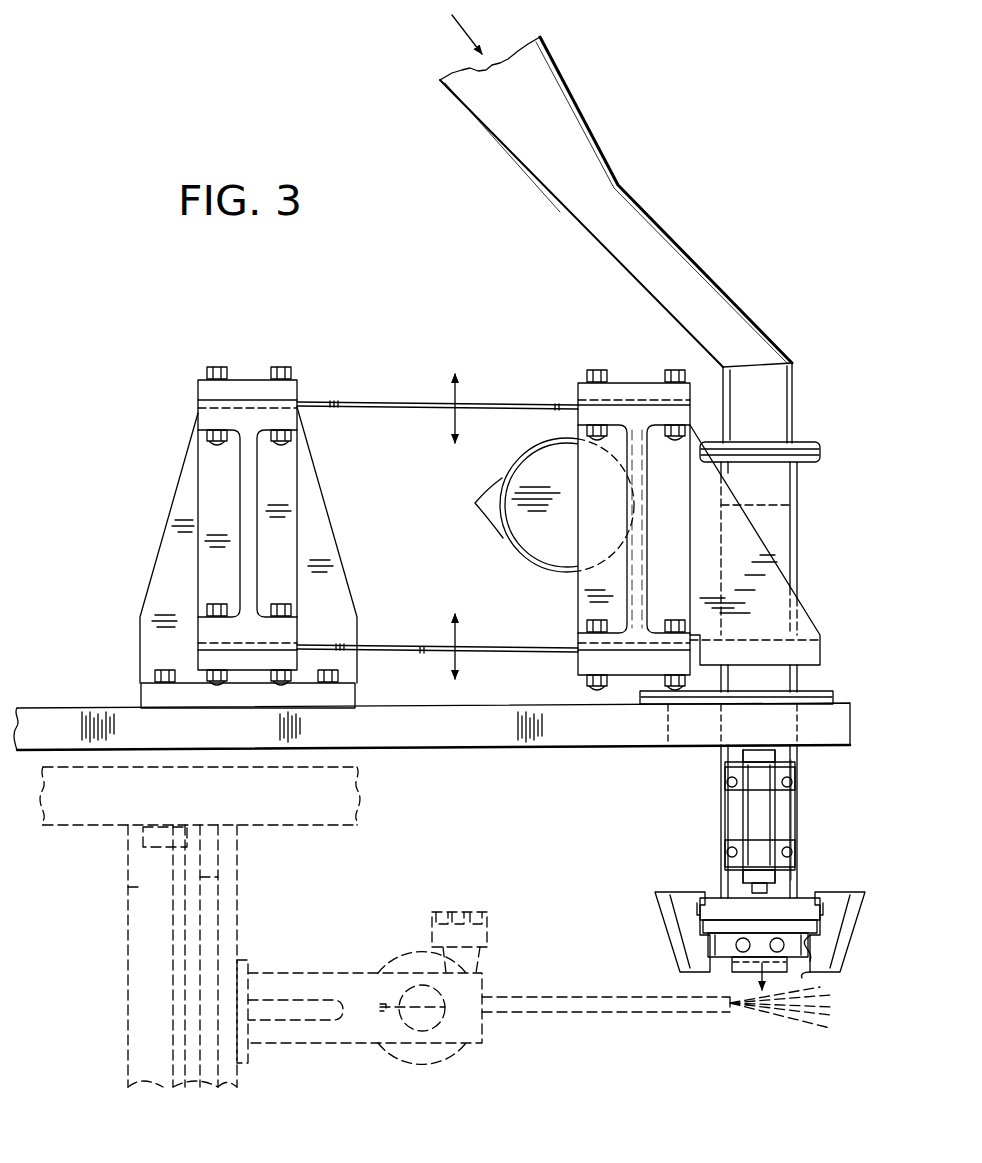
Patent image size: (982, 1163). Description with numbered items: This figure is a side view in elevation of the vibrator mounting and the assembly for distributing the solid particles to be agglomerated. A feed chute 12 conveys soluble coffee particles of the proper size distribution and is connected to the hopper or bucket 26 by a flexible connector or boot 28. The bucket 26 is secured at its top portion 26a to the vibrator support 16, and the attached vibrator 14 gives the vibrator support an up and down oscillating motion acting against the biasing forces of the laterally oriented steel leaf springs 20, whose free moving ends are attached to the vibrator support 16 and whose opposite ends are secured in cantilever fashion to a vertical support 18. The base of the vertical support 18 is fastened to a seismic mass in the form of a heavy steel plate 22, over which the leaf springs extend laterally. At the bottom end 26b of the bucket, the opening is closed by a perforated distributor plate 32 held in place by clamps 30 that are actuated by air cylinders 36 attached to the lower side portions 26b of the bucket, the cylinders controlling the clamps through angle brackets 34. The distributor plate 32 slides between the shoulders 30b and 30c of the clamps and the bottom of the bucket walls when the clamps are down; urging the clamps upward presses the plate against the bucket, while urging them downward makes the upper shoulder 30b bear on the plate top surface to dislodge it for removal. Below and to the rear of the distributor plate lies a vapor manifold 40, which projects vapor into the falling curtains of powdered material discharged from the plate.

The feed chute 12 is at (579, 106).
The vibrator 14 is at (533, 523).
The vibrator support 16 is at (694, 520).
The vertical support 18 is at (246, 502).
The steel leaf springs 20 is at (410, 402).
The heavy steel plate 22 is at (498, 733).
The bucket 26 is at (803, 783).
The top portion of the bucket 26a is at (787, 530).
The bottom end of the bucket 26b is at (800, 823).
The flexible connector or boot 28 is at (810, 445).
The clamps 30 is at (687, 908).
The upper shoulder of the clamp 30b is at (817, 940).
The shoulder of the clamp 30c is at (807, 970).
The perforated distributor plate 32 is at (721, 965).
The angle brackets 34 is at (727, 770).
The air cylinders 36 is at (757, 812).
The vapor manifold 40 is at (491, 986).